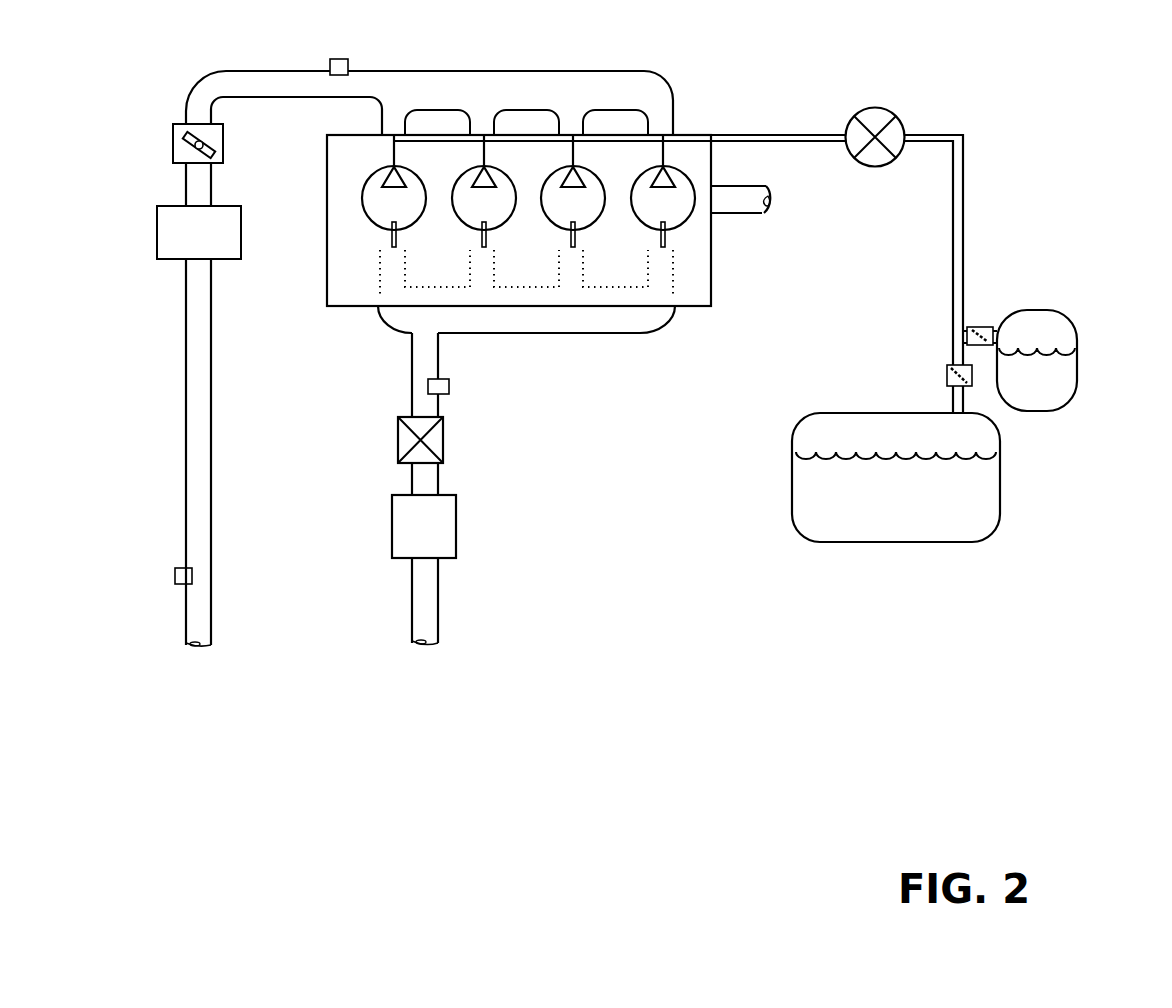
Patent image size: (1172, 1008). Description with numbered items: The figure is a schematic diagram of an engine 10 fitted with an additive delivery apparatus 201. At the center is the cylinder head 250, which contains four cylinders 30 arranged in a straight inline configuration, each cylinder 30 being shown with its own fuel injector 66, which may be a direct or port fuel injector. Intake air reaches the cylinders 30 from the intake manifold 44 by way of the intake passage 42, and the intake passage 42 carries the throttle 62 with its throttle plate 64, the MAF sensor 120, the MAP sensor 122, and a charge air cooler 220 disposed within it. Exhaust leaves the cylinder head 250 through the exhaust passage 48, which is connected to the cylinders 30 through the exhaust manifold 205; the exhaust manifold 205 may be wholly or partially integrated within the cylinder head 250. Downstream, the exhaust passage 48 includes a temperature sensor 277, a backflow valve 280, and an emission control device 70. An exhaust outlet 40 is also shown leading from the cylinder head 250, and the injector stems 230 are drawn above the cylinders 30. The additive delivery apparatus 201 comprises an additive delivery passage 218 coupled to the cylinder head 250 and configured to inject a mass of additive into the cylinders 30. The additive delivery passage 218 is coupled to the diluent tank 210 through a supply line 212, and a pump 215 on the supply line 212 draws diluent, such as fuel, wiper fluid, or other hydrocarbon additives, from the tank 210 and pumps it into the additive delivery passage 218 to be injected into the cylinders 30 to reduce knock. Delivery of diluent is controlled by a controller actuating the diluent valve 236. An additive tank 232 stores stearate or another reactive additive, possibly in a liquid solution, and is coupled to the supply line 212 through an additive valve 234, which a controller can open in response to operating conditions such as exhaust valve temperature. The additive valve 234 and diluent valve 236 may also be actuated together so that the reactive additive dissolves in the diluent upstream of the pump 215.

The engine 10 is at (757, 66).
The cylinder 30 is at (675, 211).
The exhaust passage 40 is at (751, 184).
The intake passage 42 is at (211, 538).
The intake manifold 44 is at (428, 98).
The exhaust passage 48 is at (437, 619).
The throttle 62 is at (178, 127).
The throttle plate 64 is at (193, 146).
The fuel injector 66 is at (391, 238).
The emission control device 70 is at (436, 535).
The MAF sensor 120 is at (176, 570).
The MAP sensor 122 is at (330, 60).
The additive delivery apparatus 201 is at (1000, 212).
The exhaust manifold 205 is at (668, 318).
The tank 210 is at (880, 413).
The supply line 212 is at (948, 133).
The pump 215 is at (877, 107).
The additive delivery passage 218 is at (704, 137).
The charge air cooler 220 is at (157, 242).
The fuel injector 230 is at (661, 158).
The additive tank 232 is at (1068, 315).
The additive valve 234 is at (982, 324).
The diluent valve 236 is at (950, 366).
The cylinder head 250 is at (712, 228).
The temperature sensor 277 is at (452, 382).
The backflow valve 280 is at (445, 430).